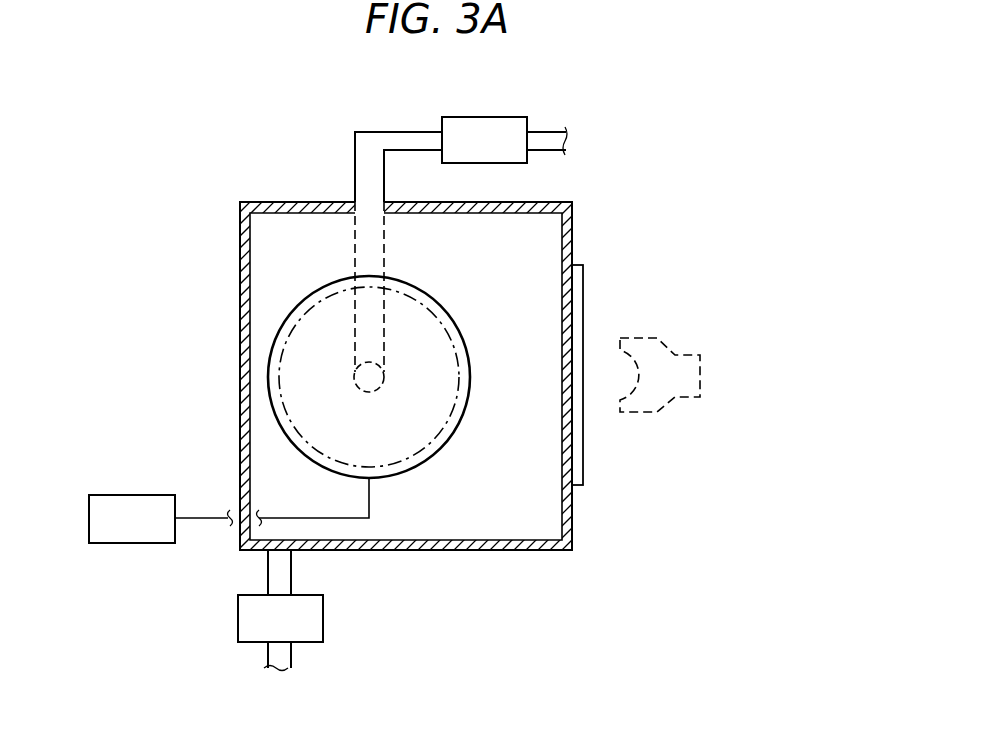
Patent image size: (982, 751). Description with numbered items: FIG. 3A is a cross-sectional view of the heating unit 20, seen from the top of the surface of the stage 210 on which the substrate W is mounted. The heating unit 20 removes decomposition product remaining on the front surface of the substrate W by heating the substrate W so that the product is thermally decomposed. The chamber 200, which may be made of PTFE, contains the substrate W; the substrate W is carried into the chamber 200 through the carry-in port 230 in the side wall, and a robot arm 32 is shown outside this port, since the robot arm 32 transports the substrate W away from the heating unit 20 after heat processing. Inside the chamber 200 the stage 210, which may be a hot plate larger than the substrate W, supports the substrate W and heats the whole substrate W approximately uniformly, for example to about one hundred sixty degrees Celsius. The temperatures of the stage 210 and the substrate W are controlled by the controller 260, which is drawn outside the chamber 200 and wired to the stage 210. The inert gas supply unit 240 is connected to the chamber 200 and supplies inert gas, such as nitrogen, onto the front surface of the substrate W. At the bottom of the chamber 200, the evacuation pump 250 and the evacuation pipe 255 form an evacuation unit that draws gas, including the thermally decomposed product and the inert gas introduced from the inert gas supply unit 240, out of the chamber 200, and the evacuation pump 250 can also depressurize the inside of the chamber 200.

The heating unit 20 is at (621, 219).
The chamber 200 is at (572, 517).
The stage 210 is at (327, 283).
The carry-in port 230 is at (583, 295).
The inert gas supply unit 240 is at (488, 117).
The evacuation pump 250 is at (323, 620).
The evacuation pipe 255 is at (291, 573).
The controller 260 is at (137, 495).
The robot arm 32 is at (702, 375).
The substrate W is at (284, 383).